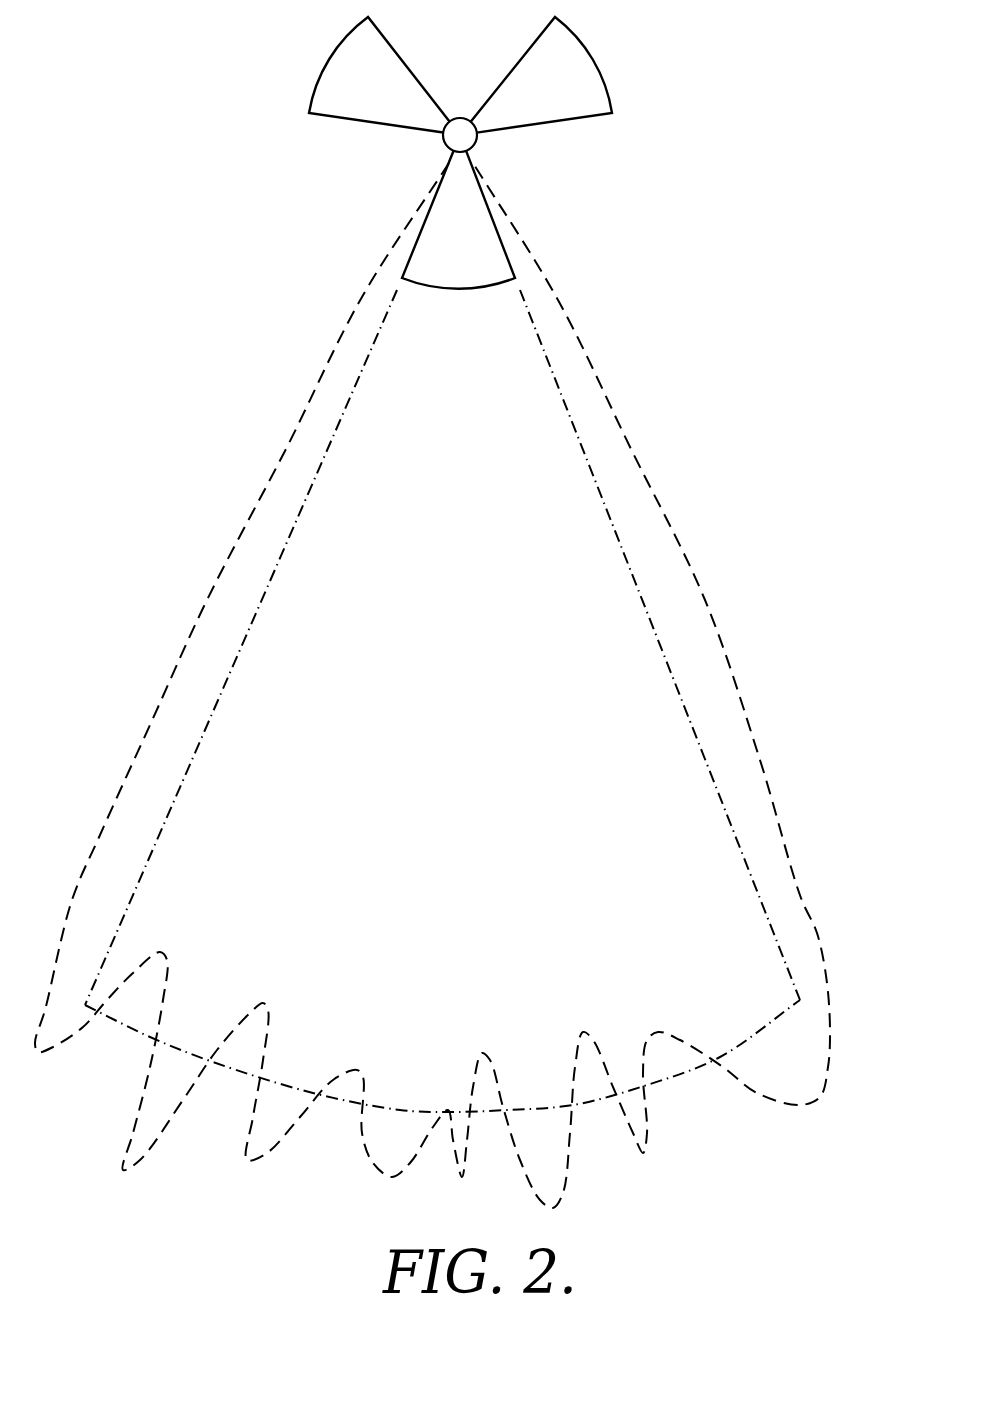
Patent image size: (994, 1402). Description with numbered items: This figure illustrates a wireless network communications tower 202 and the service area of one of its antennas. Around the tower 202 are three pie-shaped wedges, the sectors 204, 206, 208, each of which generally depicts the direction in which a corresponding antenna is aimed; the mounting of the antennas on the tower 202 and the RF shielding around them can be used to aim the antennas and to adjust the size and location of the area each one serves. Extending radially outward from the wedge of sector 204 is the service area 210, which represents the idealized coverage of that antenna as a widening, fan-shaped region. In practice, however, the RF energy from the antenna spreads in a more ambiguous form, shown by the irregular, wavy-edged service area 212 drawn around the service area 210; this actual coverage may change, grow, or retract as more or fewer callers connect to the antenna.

The wireless network communications tower 202 is at (458, 118).
The sector 204 is at (502, 233).
The sector 206 is at (607, 88).
The sector 208 is at (324, 62).
The service area 210 is at (617, 532).
The service area 212 is at (616, 417).